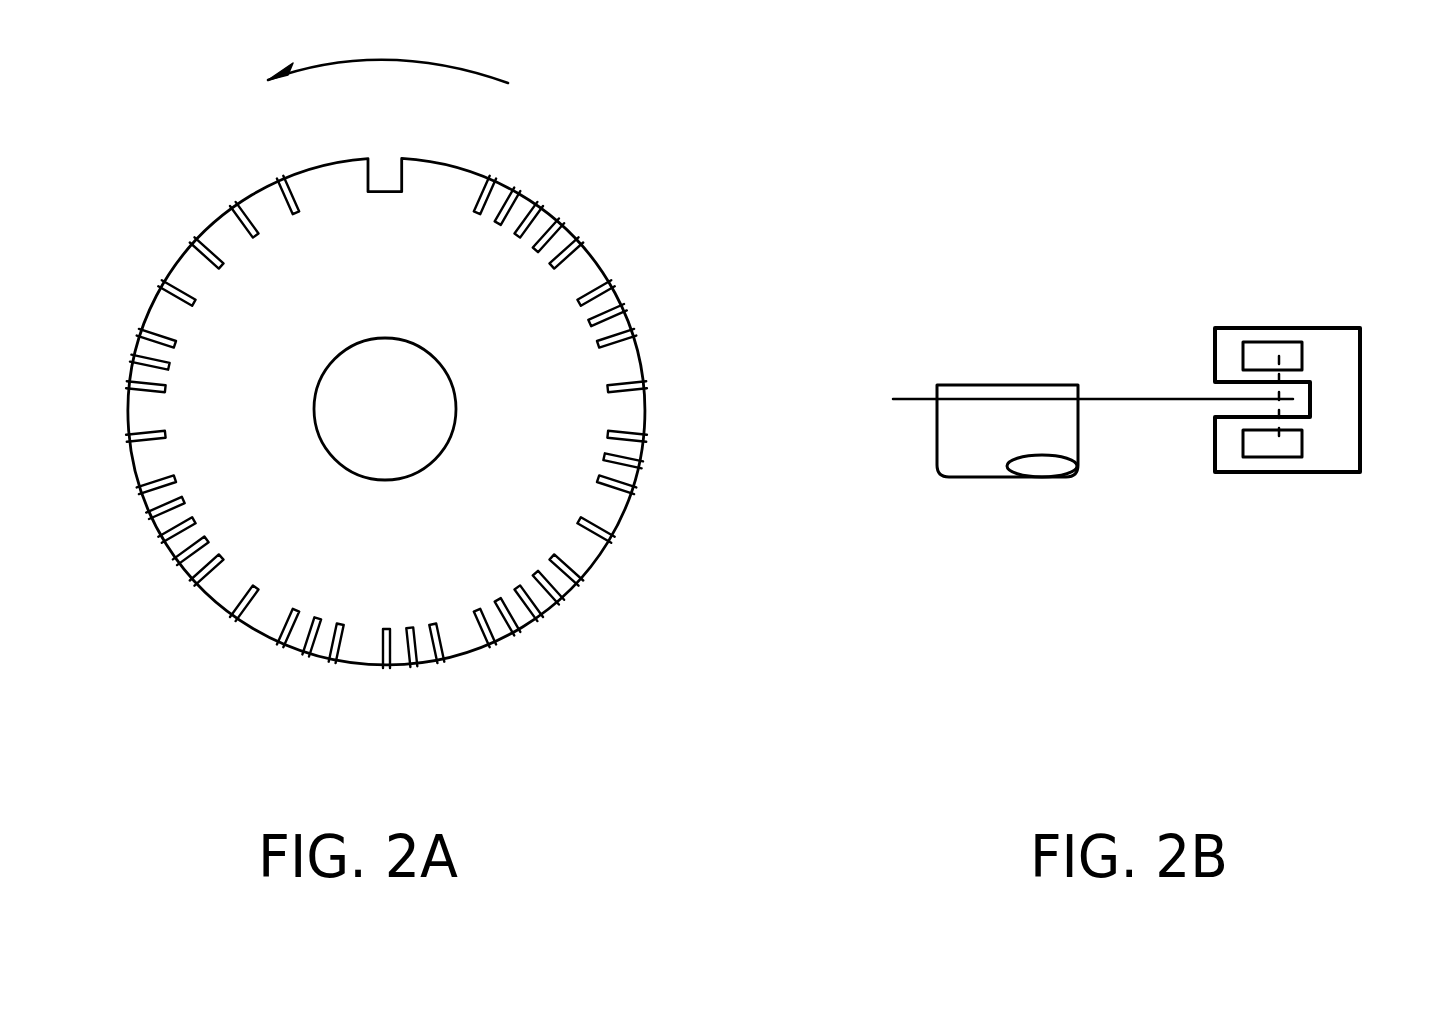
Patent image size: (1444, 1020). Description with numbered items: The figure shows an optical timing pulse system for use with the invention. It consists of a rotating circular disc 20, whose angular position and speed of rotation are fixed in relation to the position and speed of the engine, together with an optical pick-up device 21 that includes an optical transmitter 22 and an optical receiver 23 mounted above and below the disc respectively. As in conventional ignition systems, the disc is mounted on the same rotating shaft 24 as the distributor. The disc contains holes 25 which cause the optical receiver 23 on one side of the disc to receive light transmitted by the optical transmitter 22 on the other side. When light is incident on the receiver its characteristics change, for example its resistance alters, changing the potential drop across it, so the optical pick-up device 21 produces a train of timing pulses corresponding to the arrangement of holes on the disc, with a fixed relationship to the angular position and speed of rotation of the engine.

In FIG. 2A, the rotating circular disc 20 is at (386, 411).
In FIG. 2B, the rotating circular disc 20 is at (907, 399).
In FIG. 2B, the optical pick-up device 21 is at (1330, 348).
In FIG. 2B, the optical transmitter 22 is at (1265, 355).
In FIG. 2B, the optical receiver 23 is at (1265, 448).
In FIG. 2A, the rotating shaft 24 is at (385, 409).
In FIG. 2B, the rotating shaft 24 is at (1007, 431).
In FIG. 2A, the holes 25 is at (570, 243).